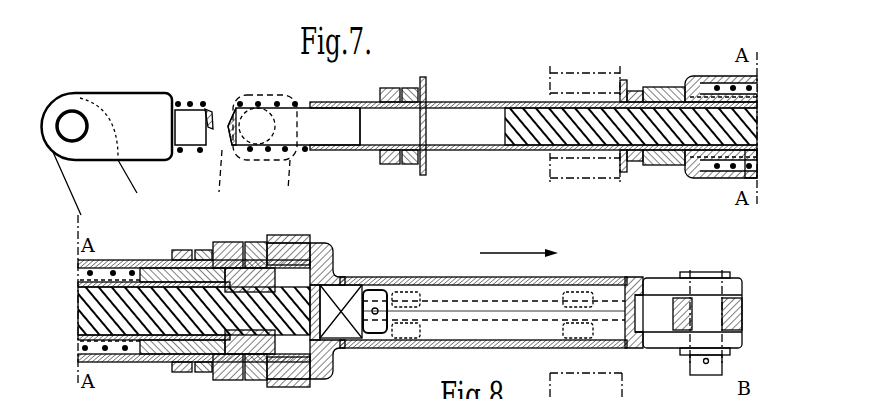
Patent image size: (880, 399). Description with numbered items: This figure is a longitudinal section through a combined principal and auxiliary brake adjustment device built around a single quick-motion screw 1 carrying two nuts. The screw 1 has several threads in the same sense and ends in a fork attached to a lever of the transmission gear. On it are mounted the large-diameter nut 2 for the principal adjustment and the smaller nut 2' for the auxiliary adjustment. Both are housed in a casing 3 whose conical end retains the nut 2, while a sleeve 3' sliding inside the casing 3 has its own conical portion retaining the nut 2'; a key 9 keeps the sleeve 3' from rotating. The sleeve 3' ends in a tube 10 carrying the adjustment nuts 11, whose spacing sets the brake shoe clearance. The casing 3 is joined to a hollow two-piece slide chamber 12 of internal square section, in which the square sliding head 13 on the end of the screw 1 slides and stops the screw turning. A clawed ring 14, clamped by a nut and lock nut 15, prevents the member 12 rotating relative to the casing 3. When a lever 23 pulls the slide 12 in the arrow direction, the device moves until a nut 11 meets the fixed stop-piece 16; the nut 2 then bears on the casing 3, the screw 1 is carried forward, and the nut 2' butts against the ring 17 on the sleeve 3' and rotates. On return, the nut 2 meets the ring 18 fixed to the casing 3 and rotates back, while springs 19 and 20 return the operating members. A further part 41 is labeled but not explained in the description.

In FIG. 7, the screw 1 is at (706, 165).
In FIG. 7, the nut 2 is at (339, 303).
In FIG. 7, the nut 2' is at (194, 291).
In FIG. 7, the casing 3 is at (154, 340).
In FIG. 7, the sleeve 3' is at (207, 333).
In FIG. 7, the key 9 is at (742, 82).
In FIG. 7, the tube 10 is at (527, 150).
In FIG. 7, the adjustment nuts 11 is at (388, 160).
In FIG. 8, the adjustment nuts 11 is at (407, 393).
In FIG. 7, the slide chamber 12 is at (337, 366).
In FIG. 7, the square sliding head 13 is at (350, 293).
In FIG. 7, the ring 14 is at (226, 380).
In FIG. 7, the nut and lock nut 15 is at (203, 372).
In FIG. 7, the stop-piece 16 is at (585, 78).
In FIG. 7, the ring 17 is at (238, 250).
In FIG. 7, the ring 18 is at (308, 380).
In FIG. 7, the spring 19 is at (297, 103).
In FIG. 7, the spring 20 is at (736, 180).
In FIG. 7, the lever 23 is at (673, 314).
In FIG. 8, the lever 41 is at (648, 393).